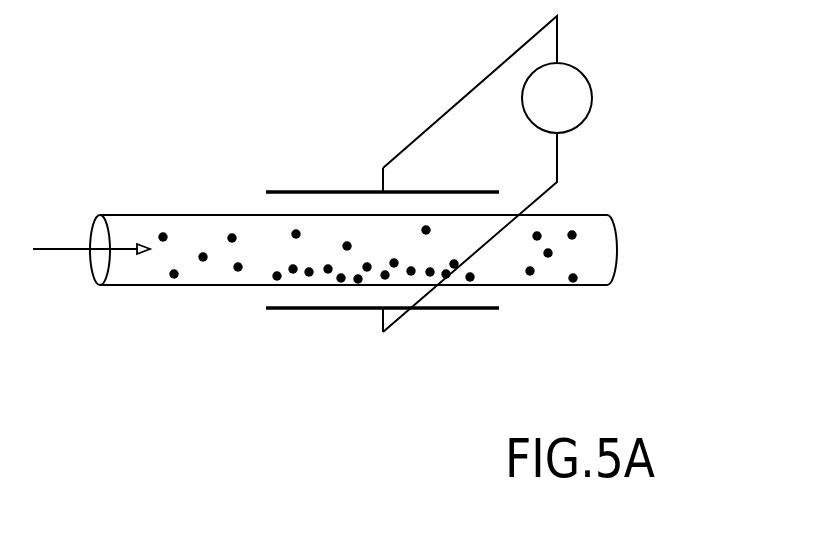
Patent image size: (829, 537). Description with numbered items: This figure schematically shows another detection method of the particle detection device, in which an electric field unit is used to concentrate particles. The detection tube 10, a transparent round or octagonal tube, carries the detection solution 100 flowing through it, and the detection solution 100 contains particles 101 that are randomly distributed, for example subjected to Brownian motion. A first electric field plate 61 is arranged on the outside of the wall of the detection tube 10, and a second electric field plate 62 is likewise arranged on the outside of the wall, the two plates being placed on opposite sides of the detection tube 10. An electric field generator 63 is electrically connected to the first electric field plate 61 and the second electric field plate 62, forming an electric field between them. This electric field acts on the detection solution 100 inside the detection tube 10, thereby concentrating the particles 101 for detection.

The detection tube 10 is at (555, 215).
The detection solution 100 is at (142, 238).
The particles 101 is at (232, 236).
The first electric field plate 61 is at (357, 192).
The second electric field plate 62 is at (478, 308).
The electric field generator 63 is at (592, 92).